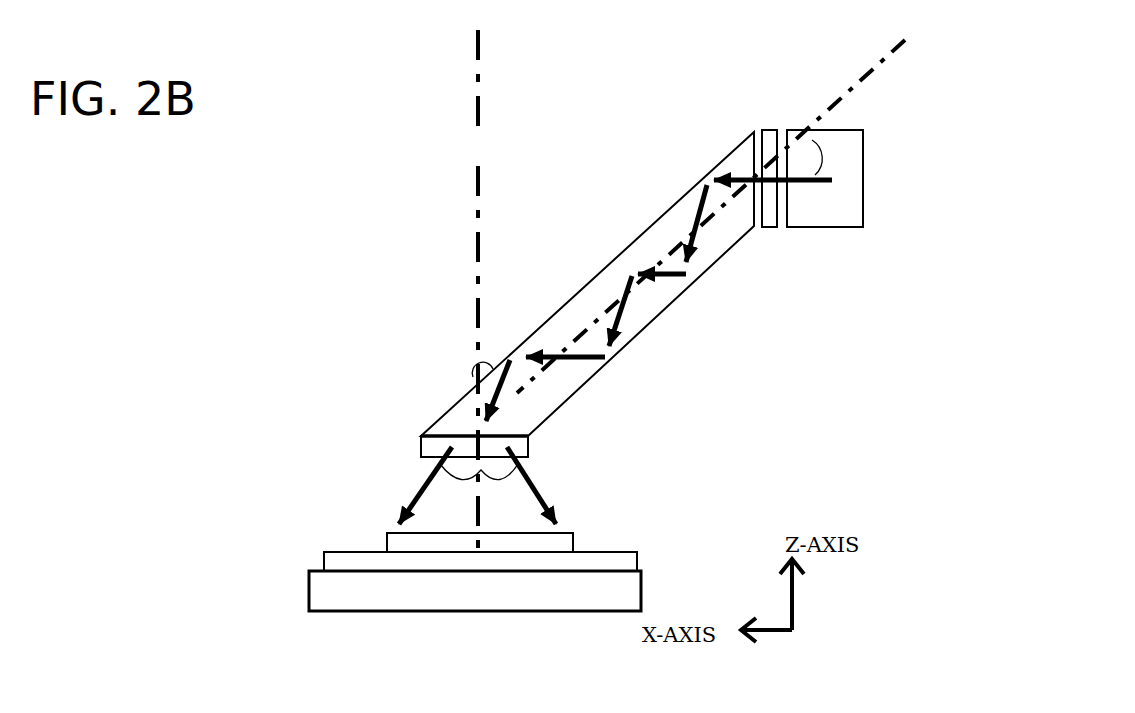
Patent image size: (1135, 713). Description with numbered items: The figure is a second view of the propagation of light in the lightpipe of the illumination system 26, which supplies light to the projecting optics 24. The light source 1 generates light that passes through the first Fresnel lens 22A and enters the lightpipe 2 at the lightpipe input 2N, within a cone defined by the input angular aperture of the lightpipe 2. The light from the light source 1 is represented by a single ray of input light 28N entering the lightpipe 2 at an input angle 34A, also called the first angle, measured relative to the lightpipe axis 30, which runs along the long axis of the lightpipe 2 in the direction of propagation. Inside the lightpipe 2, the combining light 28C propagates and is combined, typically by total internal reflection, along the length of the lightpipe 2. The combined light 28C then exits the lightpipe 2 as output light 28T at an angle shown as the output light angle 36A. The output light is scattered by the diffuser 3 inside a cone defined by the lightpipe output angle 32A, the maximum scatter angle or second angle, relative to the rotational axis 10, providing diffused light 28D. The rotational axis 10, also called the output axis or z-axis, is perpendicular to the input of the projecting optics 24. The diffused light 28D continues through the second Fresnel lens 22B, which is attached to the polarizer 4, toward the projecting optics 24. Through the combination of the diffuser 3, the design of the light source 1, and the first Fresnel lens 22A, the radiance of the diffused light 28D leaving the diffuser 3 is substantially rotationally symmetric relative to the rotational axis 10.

The illumination system 26 is at (254, 240).
The rotational axis 10 is at (478, 295).
The lightpipe axis 30 is at (862, 78).
The lightpipe 2 is at (640, 330).
The lightpipe input 2N is at (749, 230).
The first Fresnel lens 22A is at (770, 228).
The light source 1 is at (825, 178).
The input angle 34A is at (810, 159).
The input light 28N is at (747, 180).
The combining light 28C is at (510, 380).
The output light angle 36A is at (482, 368).
The output light 28T is at (550, 433).
The diffused light 28D is at (580, 520).
The lightpipe output angle 32A is at (494, 488).
The diffuser 3 is at (474, 446).
The second Fresnel lens 22B is at (480, 542).
The polarizer 4 is at (480, 562).
The projecting optics 24 is at (475, 591).